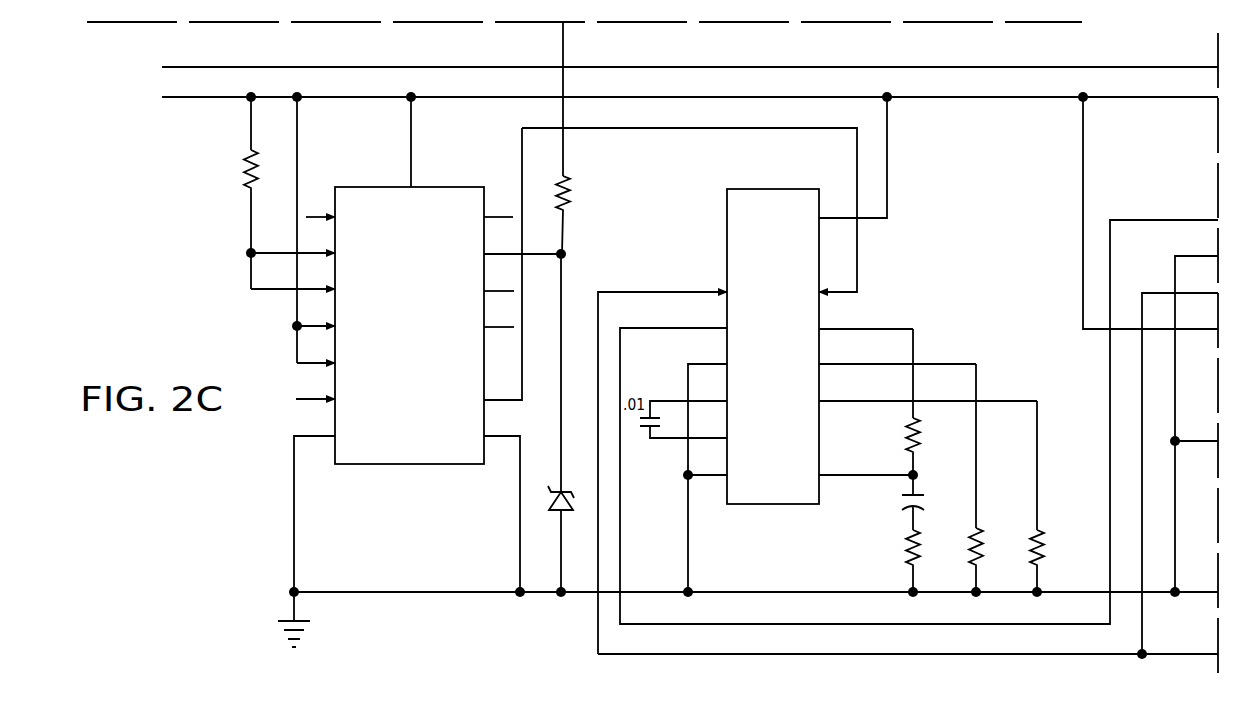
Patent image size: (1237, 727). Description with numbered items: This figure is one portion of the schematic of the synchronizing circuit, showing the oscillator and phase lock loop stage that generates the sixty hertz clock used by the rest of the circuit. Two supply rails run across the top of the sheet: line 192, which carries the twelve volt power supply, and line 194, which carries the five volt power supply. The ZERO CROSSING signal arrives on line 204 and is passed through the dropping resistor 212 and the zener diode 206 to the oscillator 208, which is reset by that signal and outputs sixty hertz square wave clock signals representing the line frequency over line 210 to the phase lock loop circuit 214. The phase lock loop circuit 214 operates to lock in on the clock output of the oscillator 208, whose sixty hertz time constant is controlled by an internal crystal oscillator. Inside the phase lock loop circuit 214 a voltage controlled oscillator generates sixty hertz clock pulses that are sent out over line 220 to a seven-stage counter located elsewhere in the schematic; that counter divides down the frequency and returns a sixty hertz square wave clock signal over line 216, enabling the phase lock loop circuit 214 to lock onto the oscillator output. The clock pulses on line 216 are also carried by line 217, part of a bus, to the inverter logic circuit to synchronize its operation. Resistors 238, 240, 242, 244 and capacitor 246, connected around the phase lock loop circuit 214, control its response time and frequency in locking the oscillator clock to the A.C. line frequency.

The line 192 is at (458, 66).
The line 194 is at (493, 100).
The line 204 is at (565, 45).
The zener diode 206 is at (548, 500).
The 8650 oscillator 208 is at (403, 188).
The line 210 is at (765, 130).
The dropping resistor 212 is at (565, 176).
The CD 4046 phase lock loop circuit 214 is at (765, 189).
The line 216 is at (680, 291).
The line 217 is at (1188, 656).
The line 220 is at (690, 327).
The resistor 238 is at (916, 450).
The resistor 240 is at (918, 528).
The resistor 242 is at (980, 530).
The resistor 244 is at (1042, 530).
The capacitor 246 is at (918, 500).